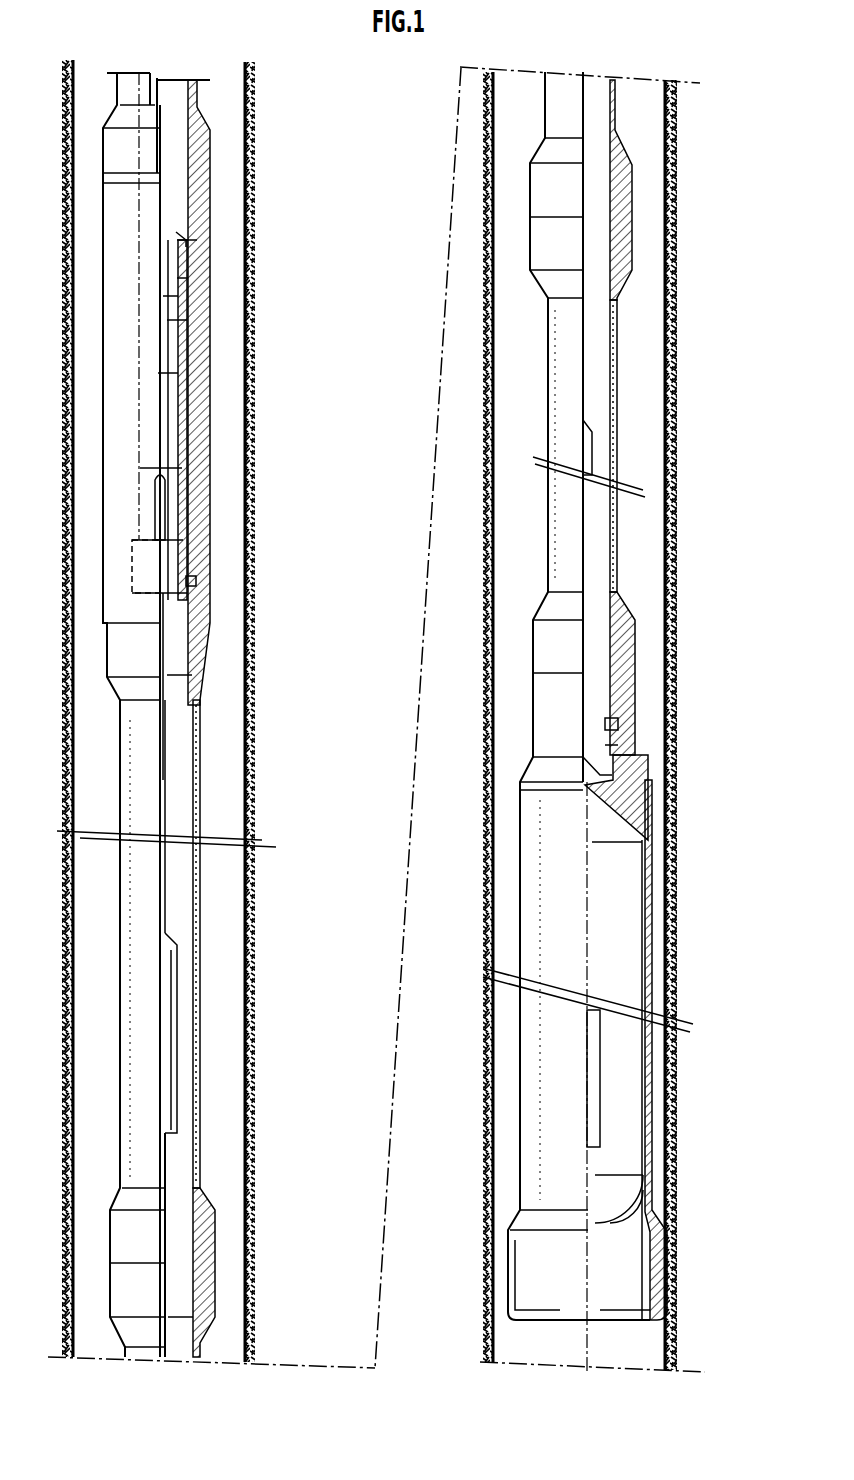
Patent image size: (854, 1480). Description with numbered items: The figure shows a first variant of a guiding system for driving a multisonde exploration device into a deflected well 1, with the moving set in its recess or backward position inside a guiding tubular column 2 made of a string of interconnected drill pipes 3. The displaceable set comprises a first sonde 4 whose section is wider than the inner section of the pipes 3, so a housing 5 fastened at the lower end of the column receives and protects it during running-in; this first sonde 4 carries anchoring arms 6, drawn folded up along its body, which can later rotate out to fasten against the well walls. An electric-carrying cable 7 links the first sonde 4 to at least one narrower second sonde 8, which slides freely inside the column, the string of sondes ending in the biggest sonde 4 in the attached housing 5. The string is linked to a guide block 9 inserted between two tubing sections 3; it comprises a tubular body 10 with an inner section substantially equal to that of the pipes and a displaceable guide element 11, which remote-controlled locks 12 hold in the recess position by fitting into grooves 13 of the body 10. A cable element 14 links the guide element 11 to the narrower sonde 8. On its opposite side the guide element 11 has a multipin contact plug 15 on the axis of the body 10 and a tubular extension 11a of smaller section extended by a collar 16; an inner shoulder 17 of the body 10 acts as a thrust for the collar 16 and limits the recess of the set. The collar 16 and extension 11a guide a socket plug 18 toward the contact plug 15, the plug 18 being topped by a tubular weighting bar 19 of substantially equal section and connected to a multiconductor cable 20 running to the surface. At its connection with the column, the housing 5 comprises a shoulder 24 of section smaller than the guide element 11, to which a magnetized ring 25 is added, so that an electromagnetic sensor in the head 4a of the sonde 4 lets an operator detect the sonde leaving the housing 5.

The well 1 is at (240, 716).
The guiding tubular column 2 is at (214, 799).
The drill pipes 3 is at (210, 145).
The first sonde 4 is at (610, 903).
The head of sonde 4a is at (615, 667).
The housing 5 is at (653, 983).
The anchoring arms 6 is at (600, 1105).
The electric-carrying cable 7 is at (168, 1175).
The second sonde 8 is at (178, 988).
The guide block 9 is at (216, 395).
The tubular body 10 is at (205, 353).
The guide element 11 is at (187, 604).
The tubular extension 11a is at (170, 300).
The locks 12 is at (200, 582).
The grooves 13 is at (193, 562).
The electric-carrying cable element 14 is at (163, 748).
The multipin contact plug 15 is at (165, 508).
The collar 16 is at (183, 283).
The inner shoulder 17 is at (185, 242).
The socket plug 18 is at (175, 417).
The tubular weighting bar 19 is at (167, 320).
The multiconductor cable 20 is at (162, 92).
The shoulder 24 is at (615, 722).
The magnetized ring 25 is at (612, 755).